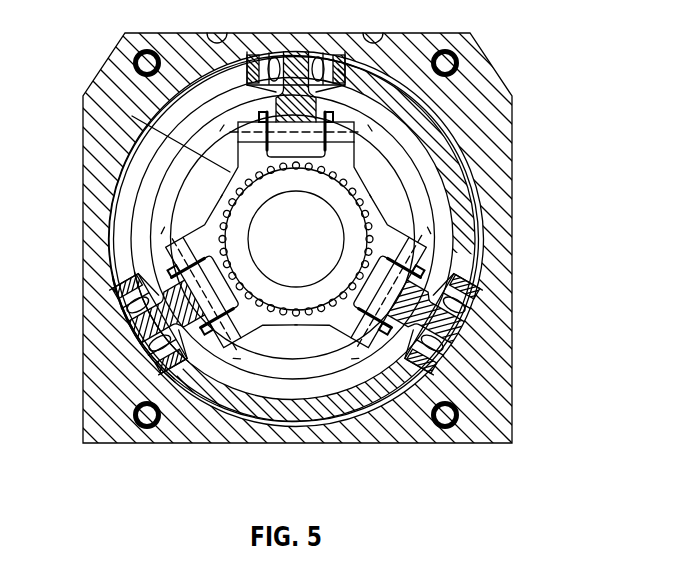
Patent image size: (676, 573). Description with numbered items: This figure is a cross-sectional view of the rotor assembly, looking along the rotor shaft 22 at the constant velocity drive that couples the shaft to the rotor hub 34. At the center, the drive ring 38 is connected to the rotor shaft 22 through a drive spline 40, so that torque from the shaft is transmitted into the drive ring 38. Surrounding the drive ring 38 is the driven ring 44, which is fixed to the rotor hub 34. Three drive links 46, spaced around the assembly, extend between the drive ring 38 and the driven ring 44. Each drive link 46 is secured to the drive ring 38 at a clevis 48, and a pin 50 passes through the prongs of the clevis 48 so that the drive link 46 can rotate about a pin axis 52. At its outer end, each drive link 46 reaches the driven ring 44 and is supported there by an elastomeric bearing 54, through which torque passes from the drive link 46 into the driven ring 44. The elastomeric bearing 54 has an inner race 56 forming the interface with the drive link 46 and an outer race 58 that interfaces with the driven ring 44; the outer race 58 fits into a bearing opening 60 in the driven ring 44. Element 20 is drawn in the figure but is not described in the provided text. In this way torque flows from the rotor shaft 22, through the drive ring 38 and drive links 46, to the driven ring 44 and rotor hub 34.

The central shaft 20 is at (310, 251).
The rotor shaft 22 is at (398, 213).
The rotor hub 34 is at (90, 295).
The drive ring 38 is at (250, 313).
The drive spline 40 is at (303, 312).
The driven ring 44 is at (128, 183).
The drive link 46 is at (140, 323).
The clevis 48 is at (442, 216).
The pin 50 is at (195, 302).
The pin axis 52 is at (165, 262).
The elastomeric bearing 54 is at (173, 277).
The inner race 56 is at (187, 373).
The outer race 58 is at (163, 362).
The bearing opening 60 is at (140, 390).